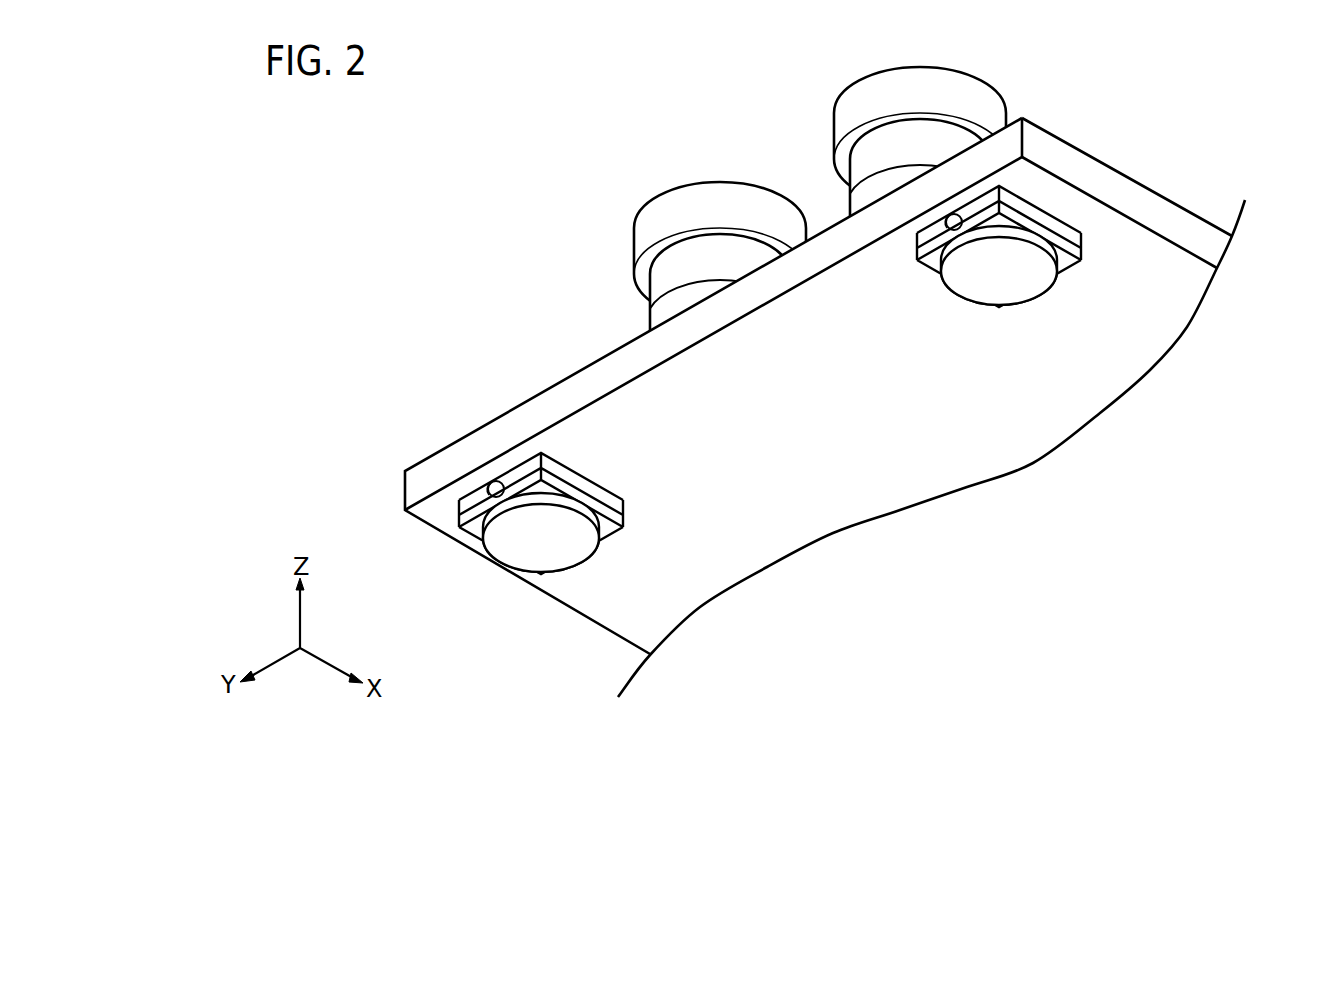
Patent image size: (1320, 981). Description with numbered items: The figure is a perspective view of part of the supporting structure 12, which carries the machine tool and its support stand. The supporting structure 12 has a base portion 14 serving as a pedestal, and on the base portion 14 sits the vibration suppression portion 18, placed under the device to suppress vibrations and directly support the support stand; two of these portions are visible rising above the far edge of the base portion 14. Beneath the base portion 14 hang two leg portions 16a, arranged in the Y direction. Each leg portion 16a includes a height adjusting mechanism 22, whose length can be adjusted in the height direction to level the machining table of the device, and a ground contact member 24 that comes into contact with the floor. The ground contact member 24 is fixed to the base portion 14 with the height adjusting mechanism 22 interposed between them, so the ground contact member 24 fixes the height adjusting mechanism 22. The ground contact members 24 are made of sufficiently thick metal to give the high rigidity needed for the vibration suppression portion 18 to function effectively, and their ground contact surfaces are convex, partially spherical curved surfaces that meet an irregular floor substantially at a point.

The supporting structure 12 is at (825, 382).
The base portion 14 is at (1057, 150).
The leg portion 16a is at (823, 380).
The vibration suppression portion 18 is at (847, 109).
The height adjusting mechanism 22 is at (628, 498).
The ground contact member 24 is at (573, 545).